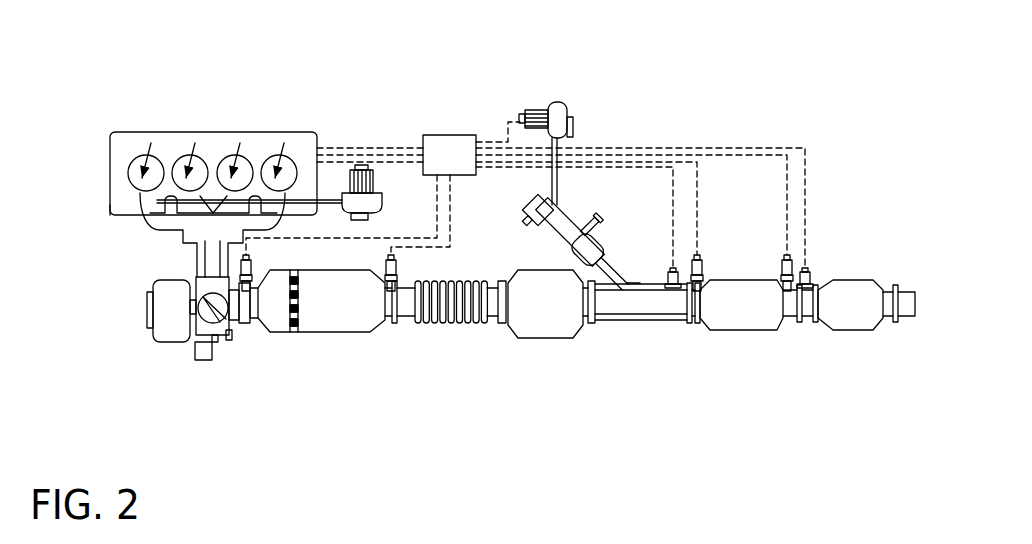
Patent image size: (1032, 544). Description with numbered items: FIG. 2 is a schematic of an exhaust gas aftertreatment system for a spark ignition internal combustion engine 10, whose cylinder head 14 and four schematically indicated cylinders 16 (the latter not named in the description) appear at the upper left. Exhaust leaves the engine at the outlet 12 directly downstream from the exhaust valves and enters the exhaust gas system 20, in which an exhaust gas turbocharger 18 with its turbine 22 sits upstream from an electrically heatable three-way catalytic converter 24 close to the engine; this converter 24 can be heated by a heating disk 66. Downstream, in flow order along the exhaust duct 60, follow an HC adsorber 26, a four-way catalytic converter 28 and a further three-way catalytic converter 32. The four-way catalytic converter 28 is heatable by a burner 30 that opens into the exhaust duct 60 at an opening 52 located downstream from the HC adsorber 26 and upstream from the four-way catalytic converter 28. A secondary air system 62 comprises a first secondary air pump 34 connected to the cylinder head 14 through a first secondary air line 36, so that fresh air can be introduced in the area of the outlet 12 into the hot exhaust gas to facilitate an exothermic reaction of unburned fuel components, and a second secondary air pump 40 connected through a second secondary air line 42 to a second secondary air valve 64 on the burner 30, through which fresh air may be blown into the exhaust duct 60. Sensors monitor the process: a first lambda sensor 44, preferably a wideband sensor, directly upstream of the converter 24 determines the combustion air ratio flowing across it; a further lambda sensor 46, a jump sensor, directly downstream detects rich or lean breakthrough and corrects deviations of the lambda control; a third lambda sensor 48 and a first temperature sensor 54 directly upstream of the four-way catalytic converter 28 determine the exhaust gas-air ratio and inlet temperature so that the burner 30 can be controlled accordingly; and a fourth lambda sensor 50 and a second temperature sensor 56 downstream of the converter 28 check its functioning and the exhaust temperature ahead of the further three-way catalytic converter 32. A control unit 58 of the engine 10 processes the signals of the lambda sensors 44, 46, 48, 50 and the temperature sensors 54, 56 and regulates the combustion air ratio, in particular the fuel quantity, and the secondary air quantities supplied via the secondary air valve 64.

The internal combustion engine 10 is at (110, 142).
The outlet 12 is at (197, 220).
The cylinder head 14 is at (120, 200).
The cylinders 16 is at (150, 168).
The exhaust gas turbocharger 18 is at (192, 310).
The exhaust gas system 20 is at (440, 368).
The turbine 22 is at (220, 328).
The electrically heatable three-way catalytic converter 24 is at (346, 318).
The HC adsorber 26 is at (540, 318).
The four-way catalytic converter 28 is at (740, 307).
The burner 30 is at (578, 238).
The further three-way catalytic converter 32 is at (855, 307).
The first secondary air pump 34 is at (365, 182).
The first secondary air line 36 is at (325, 200).
The second secondary air pump 40 is at (538, 118).
The second secondary air line 42 is at (555, 178).
The first lambda sensor 44 is at (246, 270).
The further lambda sensor 46 is at (393, 272).
The third lambda sensor 48 is at (700, 273).
The fourth lambda sensor 50 is at (783, 263).
The opening 52 is at (628, 282).
The first temperature sensor 54 is at (672, 280).
The second temperature sensor 56 is at (808, 278).
The control unit 58 is at (450, 145).
The exhaust duct 60 is at (655, 307).
The secondary air system 62 is at (503, 98).
The second secondary air valve 64 is at (538, 208).
The heating disk 66 is at (293, 327).